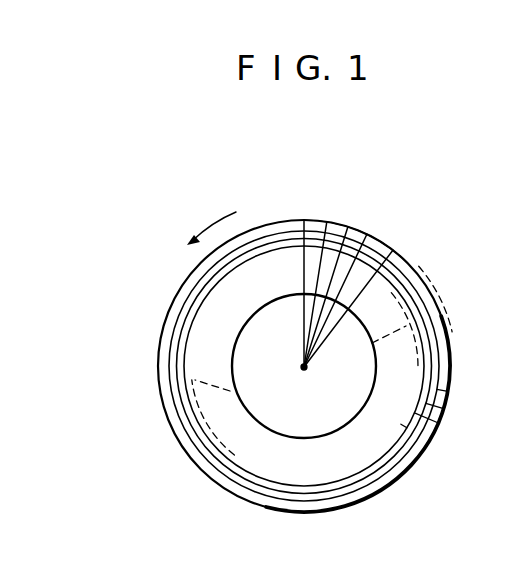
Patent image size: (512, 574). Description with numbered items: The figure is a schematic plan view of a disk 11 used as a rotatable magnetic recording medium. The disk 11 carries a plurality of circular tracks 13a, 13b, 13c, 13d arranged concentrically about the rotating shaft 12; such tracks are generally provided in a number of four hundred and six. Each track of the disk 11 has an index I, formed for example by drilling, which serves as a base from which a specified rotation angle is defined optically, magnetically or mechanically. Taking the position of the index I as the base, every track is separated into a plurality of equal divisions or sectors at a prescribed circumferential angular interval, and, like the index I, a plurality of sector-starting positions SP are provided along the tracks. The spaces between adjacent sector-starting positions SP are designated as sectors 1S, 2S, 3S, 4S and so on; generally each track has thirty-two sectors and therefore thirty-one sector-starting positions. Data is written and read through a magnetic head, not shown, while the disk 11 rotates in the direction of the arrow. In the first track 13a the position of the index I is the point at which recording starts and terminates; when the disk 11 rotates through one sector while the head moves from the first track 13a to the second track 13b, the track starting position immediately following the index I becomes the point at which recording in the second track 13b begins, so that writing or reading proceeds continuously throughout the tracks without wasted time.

The disk 11 is at (427, 455).
The rotating shaft 12 is at (304, 370).
The first track 13a is at (452, 366).
The second track 13b is at (449, 400).
The track 13c is at (442, 424).
The track 13d is at (435, 439).
The index I is at (301, 219).
The first sector 1S is at (318, 221).
The second sector 2S is at (348, 226).
The third sector 3S is at (373, 233).
The fourth sector 4S is at (396, 247).
The sector-starting position SP is at (333, 224).